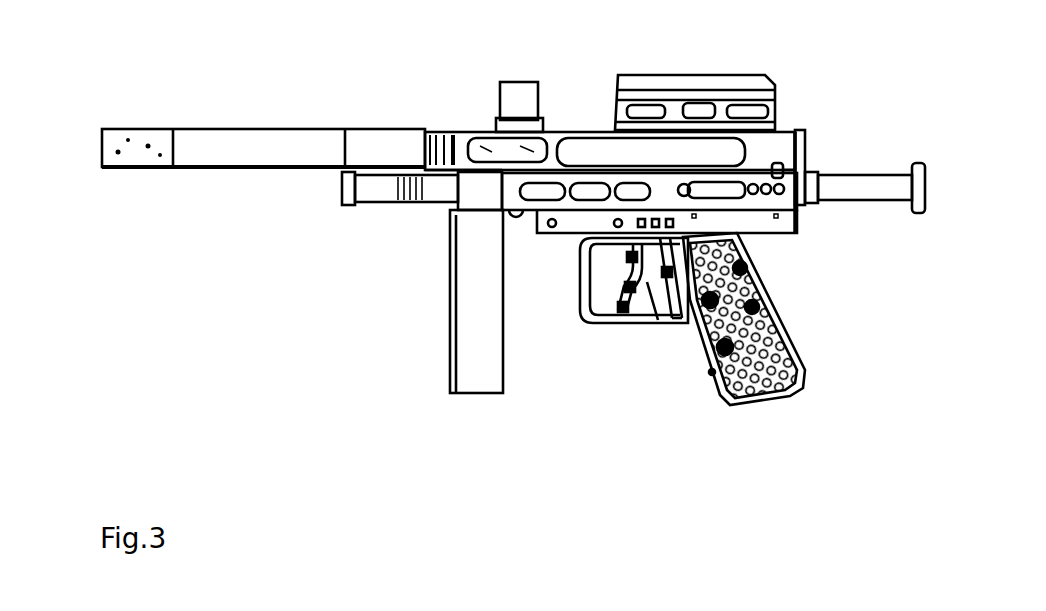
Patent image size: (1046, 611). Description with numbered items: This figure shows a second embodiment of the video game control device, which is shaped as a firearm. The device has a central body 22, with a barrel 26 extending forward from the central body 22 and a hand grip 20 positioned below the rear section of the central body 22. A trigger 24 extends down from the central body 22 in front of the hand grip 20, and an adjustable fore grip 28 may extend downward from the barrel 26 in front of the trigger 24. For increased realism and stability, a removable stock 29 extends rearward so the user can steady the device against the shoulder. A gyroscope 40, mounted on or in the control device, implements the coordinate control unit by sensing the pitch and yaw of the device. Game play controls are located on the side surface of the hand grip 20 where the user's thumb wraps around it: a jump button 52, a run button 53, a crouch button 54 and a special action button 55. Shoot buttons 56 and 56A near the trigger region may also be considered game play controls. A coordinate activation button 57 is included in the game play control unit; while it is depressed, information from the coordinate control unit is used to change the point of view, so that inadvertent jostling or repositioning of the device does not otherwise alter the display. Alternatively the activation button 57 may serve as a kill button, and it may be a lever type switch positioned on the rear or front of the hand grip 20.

The hand grip 20 is at (781, 320).
The central body 22 is at (616, 147).
The trigger 24 is at (574, 309).
The barrel 26 is at (263, 120).
The adjustable fore grip 28 is at (431, 301).
The removable stock 29 is at (867, 160).
The gyroscope 40 is at (719, 74).
The jump button 52 is at (786, 251).
The run button 53 is at (802, 287).
The crouch button 54 is at (667, 304).
The special action button 55 is at (682, 391).
The shoot button 56 is at (584, 274).
The shoot button 56A is at (570, 282).
The coordinate activation button 57 is at (633, 304).